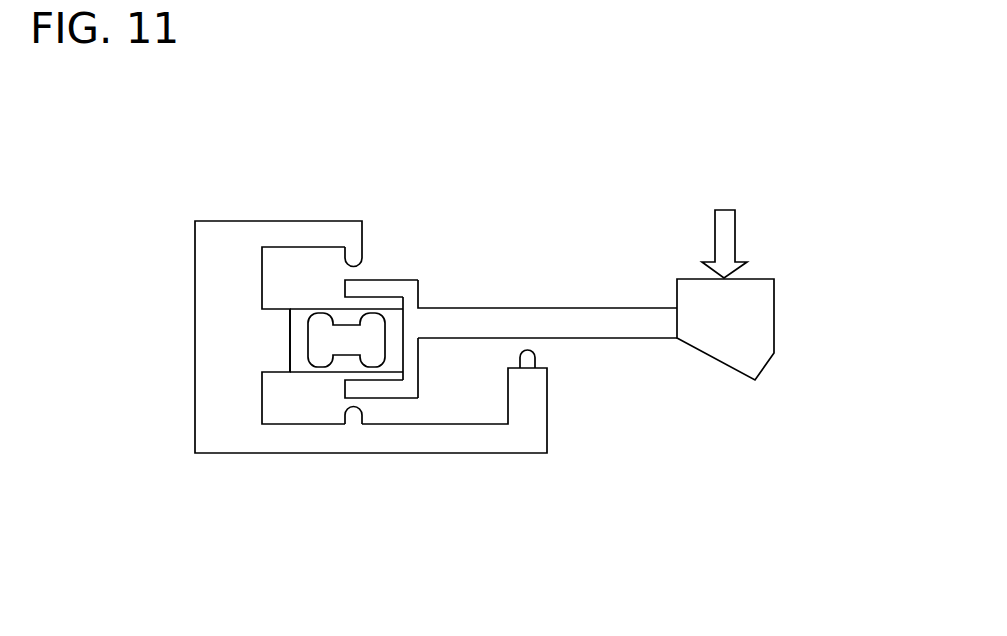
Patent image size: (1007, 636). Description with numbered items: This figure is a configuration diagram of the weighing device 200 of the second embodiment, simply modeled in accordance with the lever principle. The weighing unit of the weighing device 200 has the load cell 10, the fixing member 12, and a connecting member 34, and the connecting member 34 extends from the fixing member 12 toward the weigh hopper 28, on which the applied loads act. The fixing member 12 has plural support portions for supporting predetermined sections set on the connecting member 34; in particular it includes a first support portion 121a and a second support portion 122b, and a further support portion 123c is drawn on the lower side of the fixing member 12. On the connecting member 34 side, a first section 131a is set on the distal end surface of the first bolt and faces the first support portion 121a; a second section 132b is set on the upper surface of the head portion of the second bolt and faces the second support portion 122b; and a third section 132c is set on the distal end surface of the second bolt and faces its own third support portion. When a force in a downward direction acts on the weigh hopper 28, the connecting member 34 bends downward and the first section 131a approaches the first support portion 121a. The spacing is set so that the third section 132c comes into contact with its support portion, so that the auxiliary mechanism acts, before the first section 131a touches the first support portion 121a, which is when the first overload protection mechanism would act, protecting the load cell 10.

The weighing device 200 is at (538, 175).
The fixing member 12 is at (218, 235).
The load cell 10 is at (300, 365).
The connecting member 34 is at (460, 320).
The weigh hopper 28 is at (730, 345).
The second support portion 122b is at (350, 256).
The lower projection of frame 123c is at (358, 408).
The first support portion 121a is at (537, 355).
The first section 131a is at (527, 336).
The second section 132b is at (364, 278).
The third section 132c is at (355, 392).